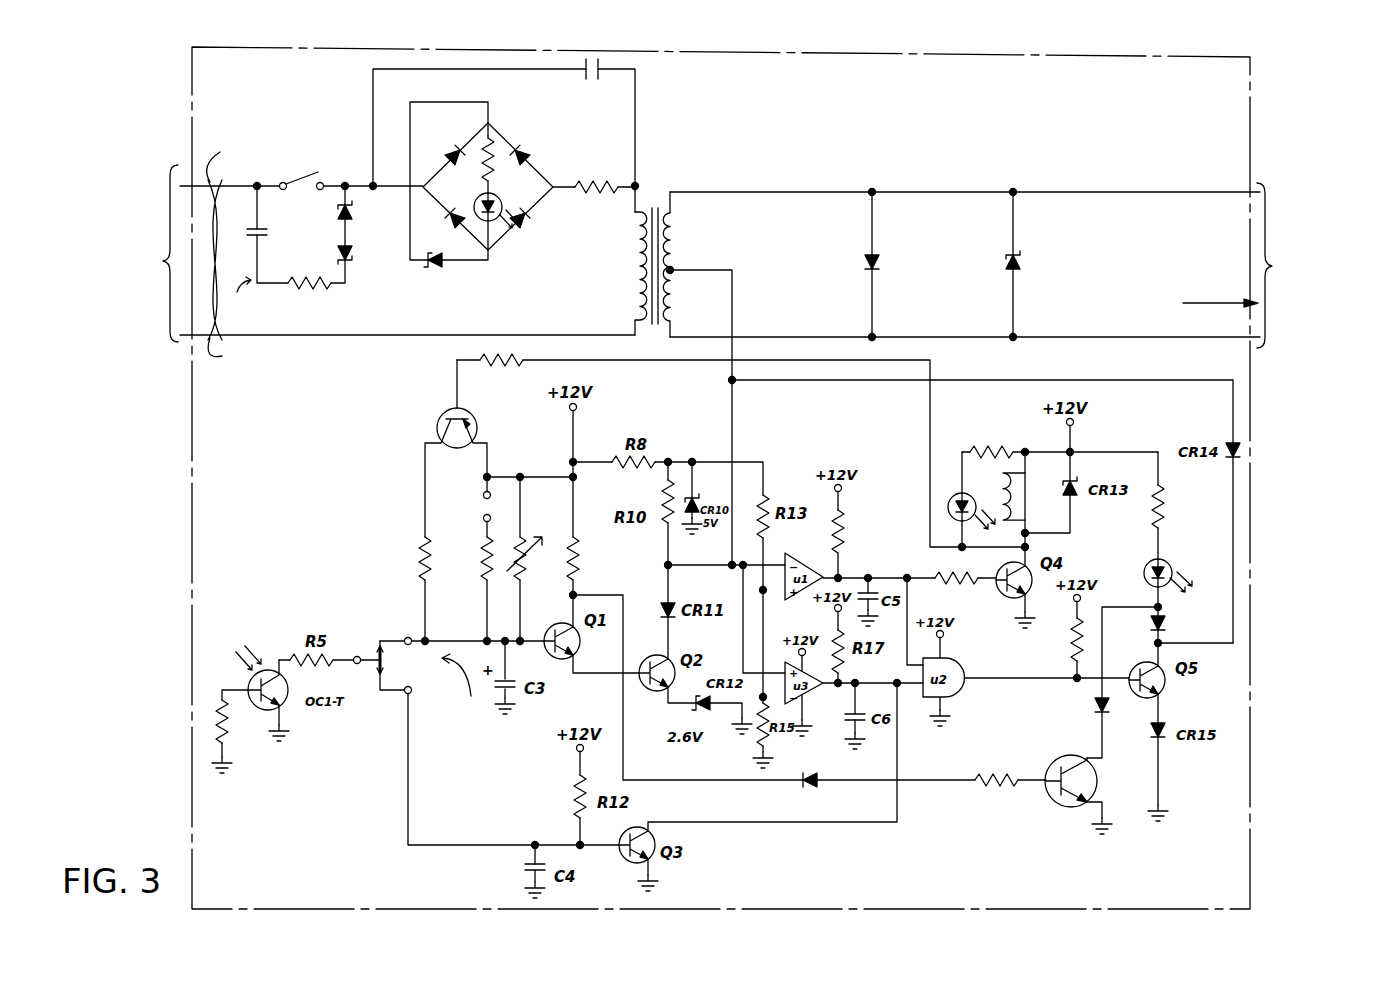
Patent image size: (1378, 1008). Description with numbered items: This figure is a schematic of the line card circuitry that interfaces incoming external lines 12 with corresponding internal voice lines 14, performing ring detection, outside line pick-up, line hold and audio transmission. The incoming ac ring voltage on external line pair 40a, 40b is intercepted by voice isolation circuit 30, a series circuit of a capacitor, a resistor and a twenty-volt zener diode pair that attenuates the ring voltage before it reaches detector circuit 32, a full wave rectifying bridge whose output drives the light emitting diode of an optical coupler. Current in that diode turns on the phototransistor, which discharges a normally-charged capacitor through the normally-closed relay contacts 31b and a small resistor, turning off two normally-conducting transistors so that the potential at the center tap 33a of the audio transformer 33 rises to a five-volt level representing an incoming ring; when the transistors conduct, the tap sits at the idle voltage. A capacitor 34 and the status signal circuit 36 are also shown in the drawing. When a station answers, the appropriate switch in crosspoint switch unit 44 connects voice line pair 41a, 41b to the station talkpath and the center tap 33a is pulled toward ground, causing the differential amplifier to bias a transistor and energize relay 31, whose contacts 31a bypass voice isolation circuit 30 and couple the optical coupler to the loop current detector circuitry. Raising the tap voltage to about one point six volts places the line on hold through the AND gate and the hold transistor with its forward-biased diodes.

The external lines 12 is at (348, 253).
The internal voice lines 14 is at (1298, 265).
The voice isolation circuit 30 is at (313, 257).
The relay 31 is at (1016, 510).
The relay contacts 31a is at (298, 186).
The relay contacts 31b is at (375, 676).
The detector circuit 32 is at (557, 280).
The audio transformer 33 is at (634, 258).
The center tap 33a is at (676, 268).
The capacitor 34 is at (584, 79).
The status signal circuit 36 is at (402, 522).
The external line pair 40a is at (233, 164).
The external line pair 40b is at (231, 353).
The voice line pair 41a is at (1157, 192).
The voice line pair 41b is at (1092, 339).
The crosspoint switch unit 44 is at (1157, 304).